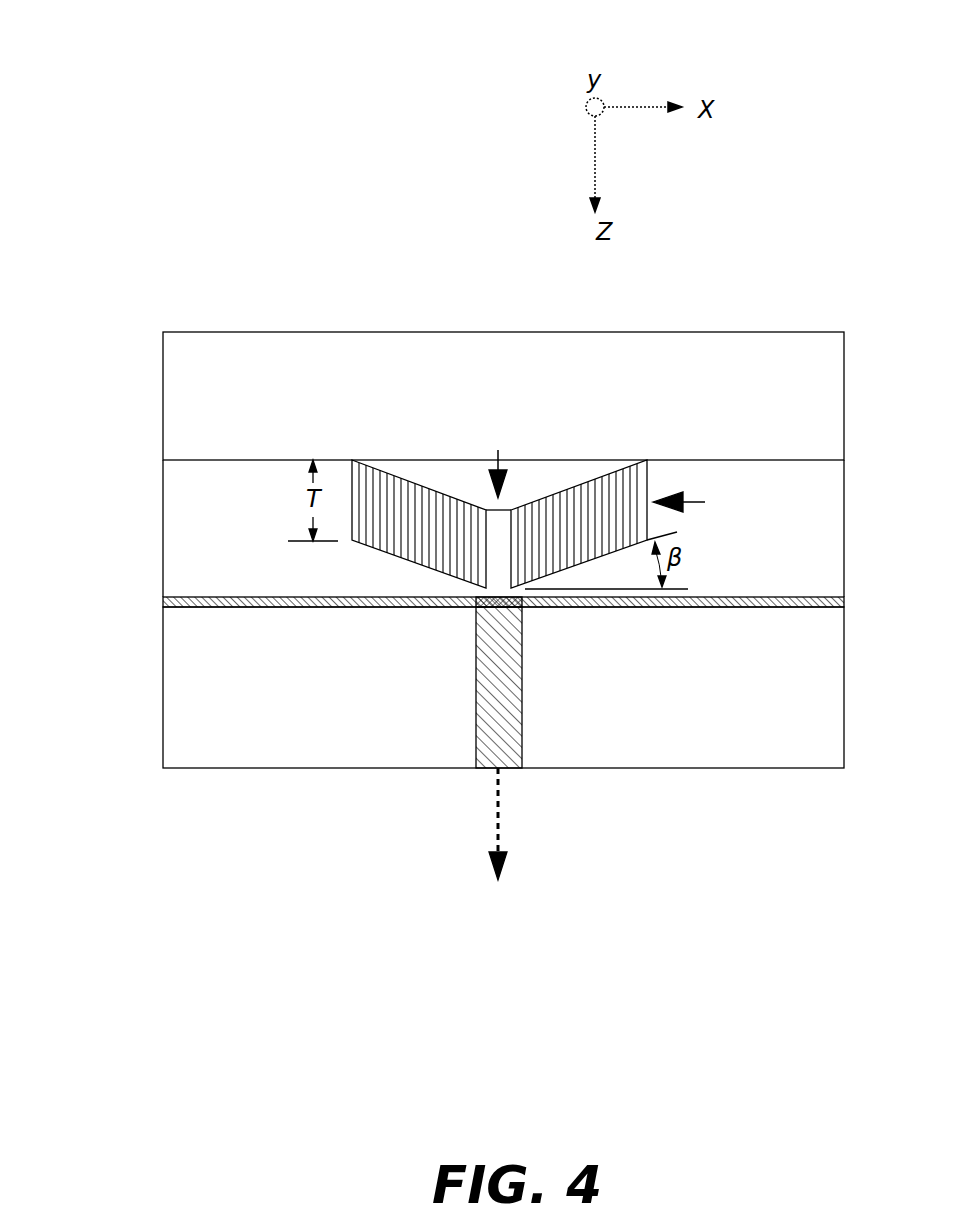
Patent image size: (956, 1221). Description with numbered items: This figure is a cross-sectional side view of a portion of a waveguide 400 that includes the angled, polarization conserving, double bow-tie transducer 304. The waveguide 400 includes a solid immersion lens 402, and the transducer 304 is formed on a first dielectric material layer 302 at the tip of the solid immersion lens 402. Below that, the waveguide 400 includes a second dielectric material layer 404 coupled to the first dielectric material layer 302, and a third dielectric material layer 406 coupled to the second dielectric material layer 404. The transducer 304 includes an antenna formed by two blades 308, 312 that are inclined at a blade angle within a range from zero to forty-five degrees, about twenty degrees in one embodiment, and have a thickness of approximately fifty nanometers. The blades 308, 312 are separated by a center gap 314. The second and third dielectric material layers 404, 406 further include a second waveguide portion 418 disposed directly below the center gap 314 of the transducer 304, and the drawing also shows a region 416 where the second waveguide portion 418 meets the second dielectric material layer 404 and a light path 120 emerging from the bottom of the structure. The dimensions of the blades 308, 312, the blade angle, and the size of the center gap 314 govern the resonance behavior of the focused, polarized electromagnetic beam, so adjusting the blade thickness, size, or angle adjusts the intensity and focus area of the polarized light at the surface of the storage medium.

The waveguide 400 is at (145, 67).
The solid immersion lens 402 is at (163, 405).
The first dielectric material layer 302 is at (163, 522).
The second dielectric material layer 404 is at (163, 609).
The third dielectric material layer 406 is at (163, 693).
The blade 308 is at (402, 495).
The blade 312 is at (555, 515).
The center gap 314 is at (498, 452).
The angled, polarization conserving, double bow-tie transducer 304 is at (705, 499).
The aperture region 416 is at (476, 598).
The second waveguide portion 418 is at (476, 688).
The output light 120 is at (498, 823).